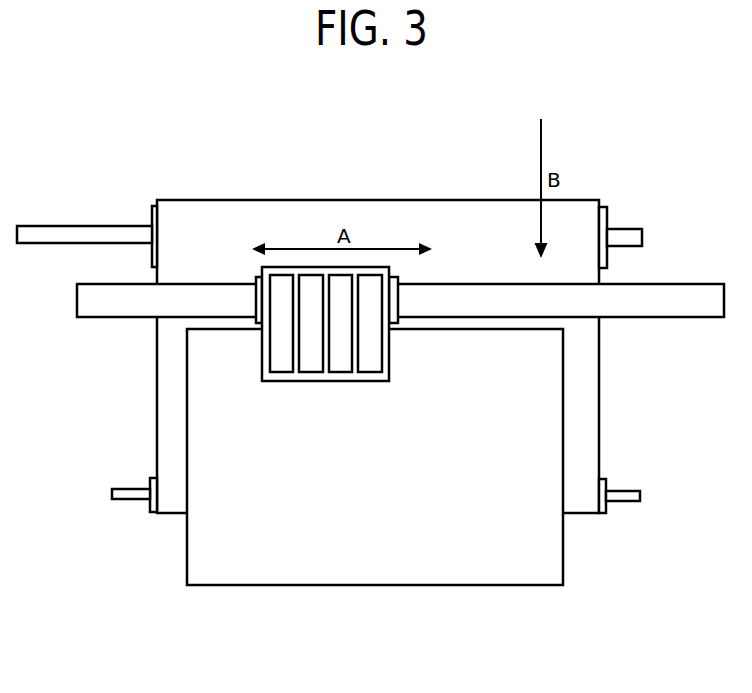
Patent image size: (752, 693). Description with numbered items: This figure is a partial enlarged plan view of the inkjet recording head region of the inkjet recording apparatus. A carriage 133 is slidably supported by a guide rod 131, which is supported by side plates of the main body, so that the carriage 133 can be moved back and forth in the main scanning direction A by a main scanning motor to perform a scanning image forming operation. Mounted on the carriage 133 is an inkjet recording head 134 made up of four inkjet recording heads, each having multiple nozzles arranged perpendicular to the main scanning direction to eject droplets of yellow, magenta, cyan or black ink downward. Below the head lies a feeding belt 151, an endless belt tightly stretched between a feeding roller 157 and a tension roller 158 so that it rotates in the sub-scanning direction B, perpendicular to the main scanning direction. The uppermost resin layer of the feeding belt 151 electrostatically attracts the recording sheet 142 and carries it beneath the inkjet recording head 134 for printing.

The guide rod 131 is at (687, 297).
The carriage 133 is at (272, 378).
The inkjet recording head 134 is at (372, 366).
The recording sheet 142 is at (282, 578).
The feeding belt 151 is at (200, 212).
The feeding roller 157 is at (152, 210).
The tension roller 158 is at (150, 482).